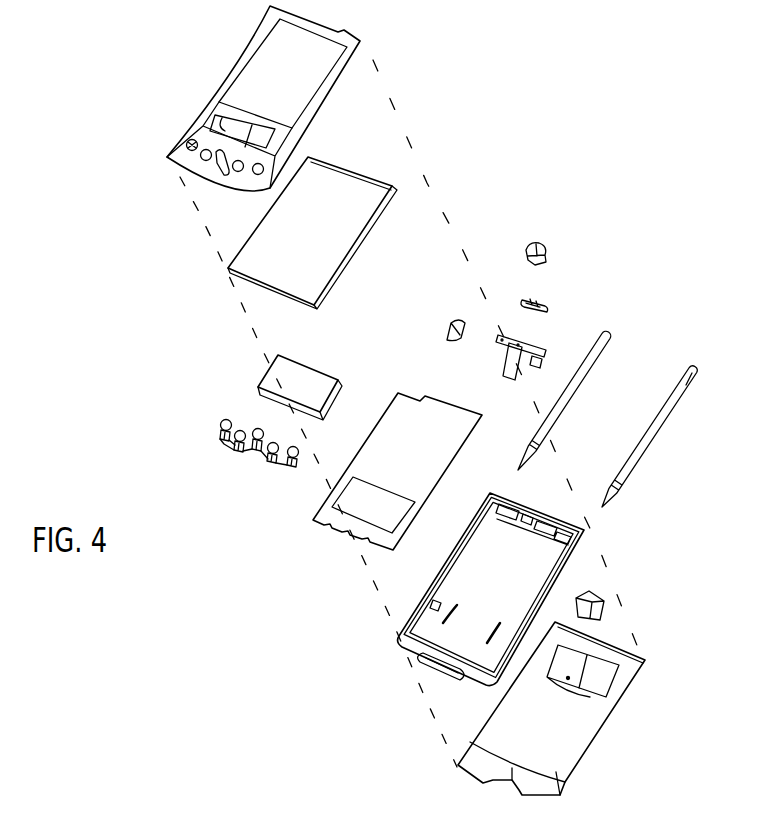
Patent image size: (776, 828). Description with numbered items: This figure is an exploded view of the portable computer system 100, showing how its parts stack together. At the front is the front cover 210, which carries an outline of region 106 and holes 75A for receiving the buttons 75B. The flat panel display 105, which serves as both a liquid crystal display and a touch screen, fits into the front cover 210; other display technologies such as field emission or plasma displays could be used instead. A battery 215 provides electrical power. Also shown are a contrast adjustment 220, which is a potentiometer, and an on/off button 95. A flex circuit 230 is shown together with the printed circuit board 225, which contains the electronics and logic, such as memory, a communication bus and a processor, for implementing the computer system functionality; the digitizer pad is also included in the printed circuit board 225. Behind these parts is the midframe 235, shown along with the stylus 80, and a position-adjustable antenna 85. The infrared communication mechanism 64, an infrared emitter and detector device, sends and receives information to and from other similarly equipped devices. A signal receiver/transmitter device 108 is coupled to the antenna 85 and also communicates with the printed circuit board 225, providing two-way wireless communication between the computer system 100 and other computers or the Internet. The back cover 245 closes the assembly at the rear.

The portable computer system 100 is at (66, 49).
The front cover 210 is at (372, 45).
The region 106 is at (235, 120).
The holes 75A is at (185, 148).
The flat panel display 105 is at (388, 181).
The battery 215 is at (258, 379).
The buttons 75B is at (216, 425).
The printed circuit board 225 is at (322, 502).
The contrast adjustment 220 is at (455, 317).
The on/off button 95 is at (548, 251).
The infrared communication mechanism 64 is at (546, 299).
The flex circuit 230 is at (538, 346).
The position-adjustable antenna 85 is at (617, 344).
The stylus 80 is at (676, 416).
The midframe 235 is at (568, 579).
The receiver/transmitter device 108 is at (604, 605).
The back cover 245 is at (622, 703).